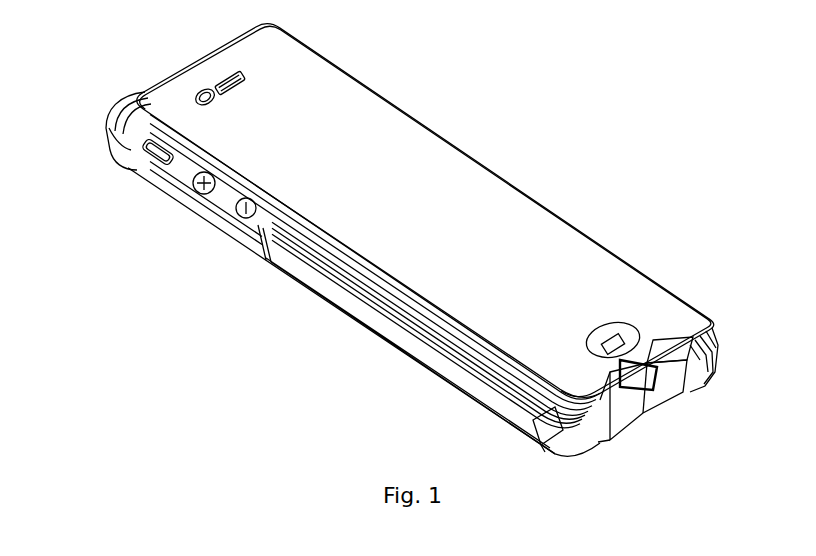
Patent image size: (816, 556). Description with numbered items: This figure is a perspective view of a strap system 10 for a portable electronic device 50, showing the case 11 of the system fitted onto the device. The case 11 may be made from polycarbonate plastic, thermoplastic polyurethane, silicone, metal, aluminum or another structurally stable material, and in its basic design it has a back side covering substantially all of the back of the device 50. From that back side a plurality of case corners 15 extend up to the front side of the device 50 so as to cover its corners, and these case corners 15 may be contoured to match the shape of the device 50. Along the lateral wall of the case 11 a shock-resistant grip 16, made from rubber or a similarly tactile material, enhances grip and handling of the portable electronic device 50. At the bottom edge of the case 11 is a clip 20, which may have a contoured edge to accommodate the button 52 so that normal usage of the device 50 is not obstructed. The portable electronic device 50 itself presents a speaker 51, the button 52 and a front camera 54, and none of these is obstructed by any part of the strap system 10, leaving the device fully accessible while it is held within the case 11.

The strap system 10 is at (640, 172).
The case 11 is at (265, 238).
The case corners 15 is at (130, 137).
The shock-resistant grip 16 is at (315, 277).
The clip 20 is at (660, 407).
The portable electronic device 50 is at (407, 183).
The speaker 51 is at (245, 78).
The button 52 is at (620, 343).
The front camera 54 is at (200, 97).